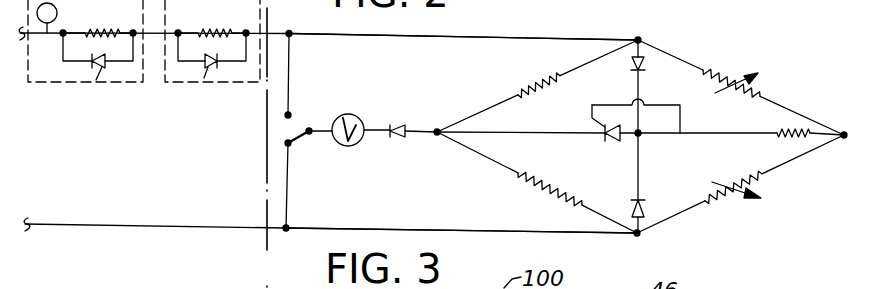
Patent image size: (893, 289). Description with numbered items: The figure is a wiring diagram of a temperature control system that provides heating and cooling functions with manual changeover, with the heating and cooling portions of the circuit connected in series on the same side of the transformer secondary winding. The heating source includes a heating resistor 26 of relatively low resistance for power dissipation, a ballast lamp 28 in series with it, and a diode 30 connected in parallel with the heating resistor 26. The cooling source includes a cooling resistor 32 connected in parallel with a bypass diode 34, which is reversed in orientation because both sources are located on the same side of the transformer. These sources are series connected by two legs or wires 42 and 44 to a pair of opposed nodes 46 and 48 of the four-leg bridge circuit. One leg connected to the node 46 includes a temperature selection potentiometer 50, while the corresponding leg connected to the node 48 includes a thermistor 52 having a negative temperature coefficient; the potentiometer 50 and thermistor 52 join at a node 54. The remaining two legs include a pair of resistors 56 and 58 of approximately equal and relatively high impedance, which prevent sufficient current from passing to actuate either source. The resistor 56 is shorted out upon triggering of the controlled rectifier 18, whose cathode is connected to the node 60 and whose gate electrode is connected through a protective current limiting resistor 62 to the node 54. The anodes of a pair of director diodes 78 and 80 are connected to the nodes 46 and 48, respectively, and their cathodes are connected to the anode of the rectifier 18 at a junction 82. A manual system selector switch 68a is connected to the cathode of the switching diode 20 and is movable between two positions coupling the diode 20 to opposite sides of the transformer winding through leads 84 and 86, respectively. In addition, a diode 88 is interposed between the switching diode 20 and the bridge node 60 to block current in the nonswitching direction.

The ballast lamp 28 is at (58, 13).
The heating resistor 26 is at (113, 32).
The diode 30 is at (96, 80).
The cooling resistor 32 is at (228, 32).
The bypass diode 34 is at (204, 78).
The lead 84 is at (290, 68).
The lead 86 is at (288, 200).
The manual system selector switch 68a is at (293, 137).
The leg or wire 42 is at (404, 38).
The leg or wire 44 is at (381, 228).
The switching diode 20 is at (356, 114).
The diode 88 is at (399, 126).
The node 60 is at (436, 135).
The resistor 56 is at (558, 77).
The resistor 58 is at (551, 194).
The node 46 is at (638, 40).
The node 48 is at (639, 236).
The director diode 78 is at (647, 62).
The director diode 80 is at (645, 210).
The junction 82 is at (641, 136).
The controlled rectifier 18 is at (617, 139).
The temperature selection potentiometer 50 is at (760, 87).
The thermistor 52 is at (726, 201).
The current limiting resistor 62 is at (786, 132).
The node 54 is at (843, 138).